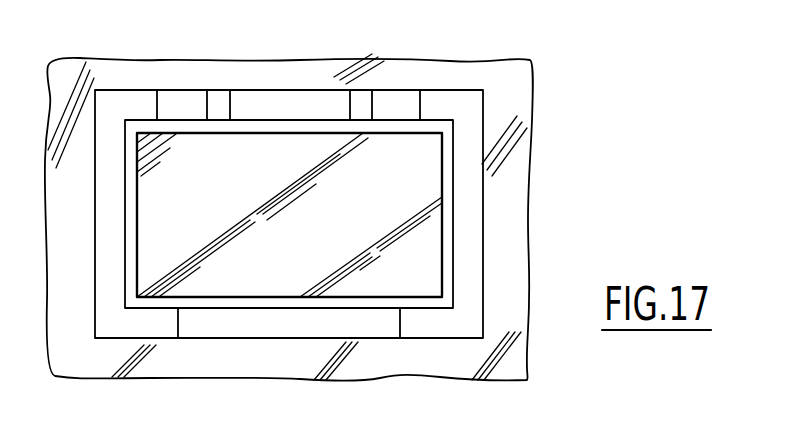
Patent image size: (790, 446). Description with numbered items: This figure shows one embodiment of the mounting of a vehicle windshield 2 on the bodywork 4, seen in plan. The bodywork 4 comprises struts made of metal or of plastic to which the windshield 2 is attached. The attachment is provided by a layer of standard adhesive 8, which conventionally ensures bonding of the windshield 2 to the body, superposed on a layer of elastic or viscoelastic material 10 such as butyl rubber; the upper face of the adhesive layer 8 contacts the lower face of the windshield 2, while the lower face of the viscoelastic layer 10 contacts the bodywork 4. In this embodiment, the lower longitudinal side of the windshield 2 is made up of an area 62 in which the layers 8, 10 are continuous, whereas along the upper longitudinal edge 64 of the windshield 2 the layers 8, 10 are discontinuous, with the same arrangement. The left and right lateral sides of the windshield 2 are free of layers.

The windshield 2 is at (408, 173).
The bodywork 4 is at (510, 158).
The layer of standard adhesive 8 is at (309, 215).
The layer of elastic or viscoelastic material 10 is at (175, 105).
The area 62 is at (323, 322).
The upper longitudinal edge 64 is at (312, 81).